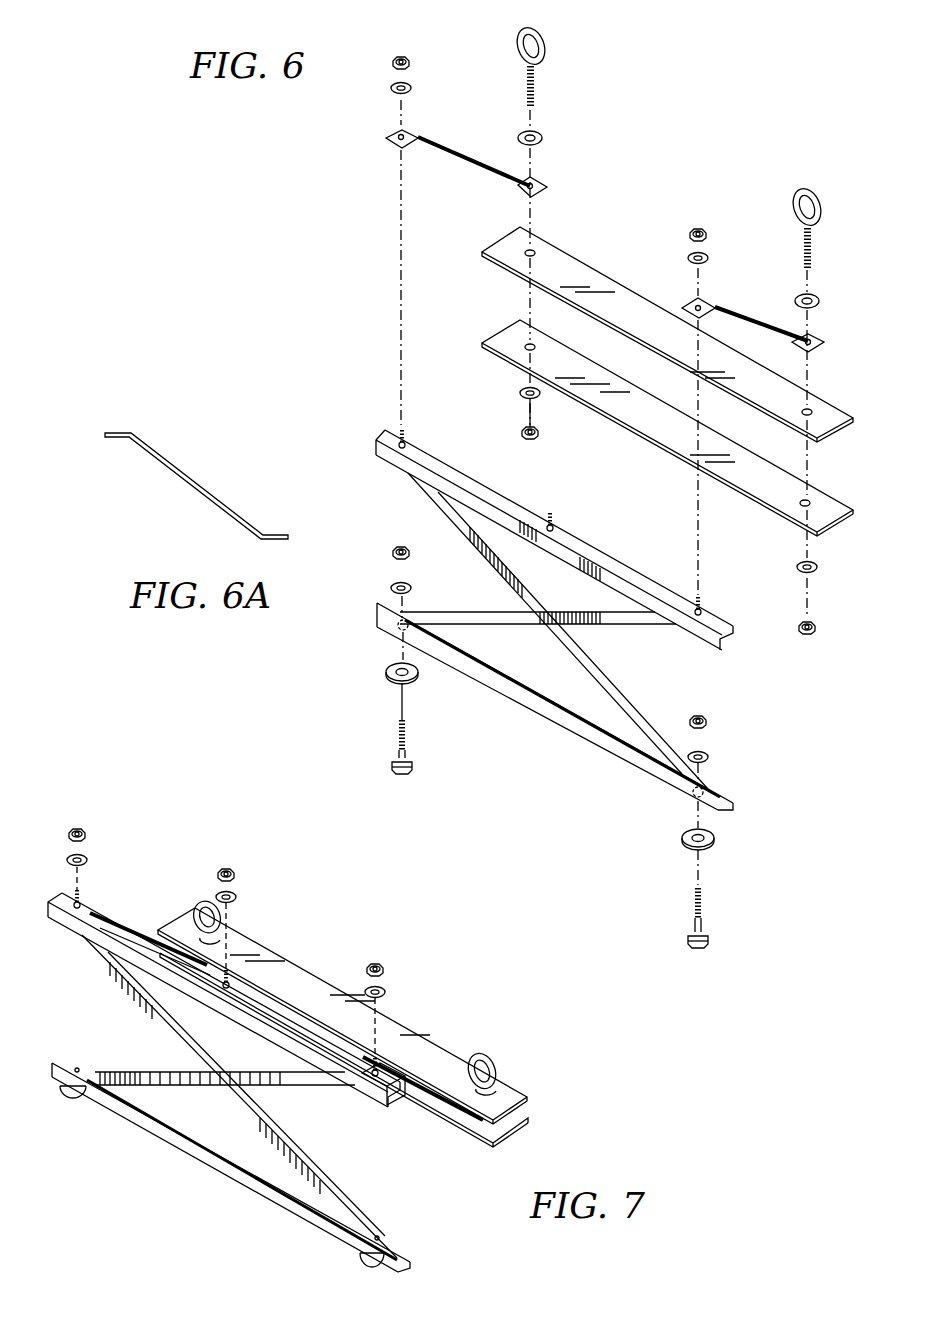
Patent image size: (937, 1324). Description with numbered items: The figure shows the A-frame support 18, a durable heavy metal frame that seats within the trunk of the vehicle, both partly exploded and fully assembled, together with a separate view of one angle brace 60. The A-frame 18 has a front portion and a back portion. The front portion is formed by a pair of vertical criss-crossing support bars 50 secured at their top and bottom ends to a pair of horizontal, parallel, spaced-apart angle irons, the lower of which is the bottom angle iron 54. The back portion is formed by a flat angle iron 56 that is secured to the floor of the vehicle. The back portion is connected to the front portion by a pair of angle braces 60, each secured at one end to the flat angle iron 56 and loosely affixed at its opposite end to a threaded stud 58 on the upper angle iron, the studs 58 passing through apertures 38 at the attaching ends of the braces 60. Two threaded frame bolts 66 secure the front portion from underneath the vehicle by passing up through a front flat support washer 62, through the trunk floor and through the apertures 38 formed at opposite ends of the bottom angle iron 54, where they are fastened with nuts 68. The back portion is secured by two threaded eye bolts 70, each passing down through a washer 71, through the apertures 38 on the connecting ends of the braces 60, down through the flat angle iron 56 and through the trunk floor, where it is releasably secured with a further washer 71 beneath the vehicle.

In FIG. 7, the A-frame support 18 is at (367, 931).
In FIG. 6, the apertures 38 is at (396, 137).
In FIG. 6, the vertical criss-crossing support bars 50 is at (608, 670).
In FIG. 7, the vertical criss-crossing support bars 50 is at (270, 1087).
In FIG. 6, the bottom angle iron 54 is at (585, 738).
In FIG. 7, the bottom angle iron 54 is at (210, 1153).
In FIG. 6, the flat angle iron 56 is at (610, 298).
In FIG. 6, the threaded studs 58 is at (398, 428).
In FIG. 7, the threaded studs 58 is at (75, 895).
In FIG. 6, the angle braces 60 is at (468, 172).
In FIG. 6A, the angle braces 60 is at (200, 482).
In FIG. 7, the angle braces 60 is at (122, 917).
In FIG. 7, the front flat support washer 62 is at (80, 1100).
In FIG. 6, the threaded frame bolts 66 is at (395, 742).
In FIG. 6, the nuts 68 is at (517, 392).
In FIG. 6, the threaded eye bolts 70 is at (546, 50).
In FIG. 7, the threaded eye bolts 70 is at (202, 900).
In FIG. 6, the washer 71 is at (545, 134).
In FIG. 7, the washer 71 is at (213, 943).